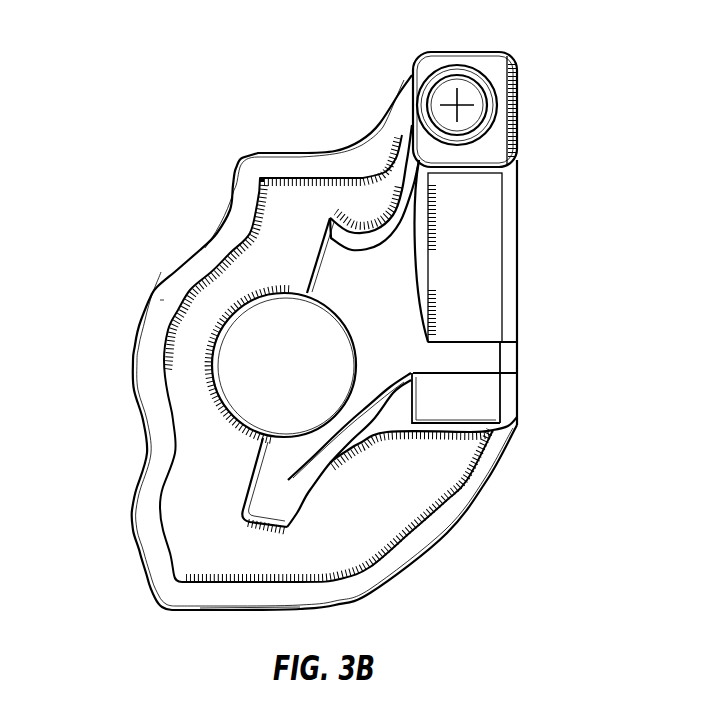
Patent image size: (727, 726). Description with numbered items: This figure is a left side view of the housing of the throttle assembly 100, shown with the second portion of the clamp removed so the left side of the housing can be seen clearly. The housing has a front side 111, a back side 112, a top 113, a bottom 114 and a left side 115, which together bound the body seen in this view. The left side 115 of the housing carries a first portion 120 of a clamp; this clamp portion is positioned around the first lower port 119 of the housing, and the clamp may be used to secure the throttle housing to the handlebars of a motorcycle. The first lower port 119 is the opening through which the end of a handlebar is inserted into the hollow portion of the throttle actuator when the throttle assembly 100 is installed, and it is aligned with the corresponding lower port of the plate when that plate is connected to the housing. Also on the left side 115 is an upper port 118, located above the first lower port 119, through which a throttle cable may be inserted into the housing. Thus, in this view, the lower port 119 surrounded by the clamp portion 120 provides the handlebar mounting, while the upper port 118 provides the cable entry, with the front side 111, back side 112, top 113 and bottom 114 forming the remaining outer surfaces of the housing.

The throttle assembly 100 is at (153, 70).
The front side 111 is at (468, 50).
The back side 112 is at (240, 612).
The top 113 is at (518, 396).
The bottom 114 is at (143, 313).
The left side 115 is at (480, 243).
The upper port 118 is at (447, 97).
The first lower port 119 is at (247, 373).
The first portion of a clamp 120 is at (273, 477).